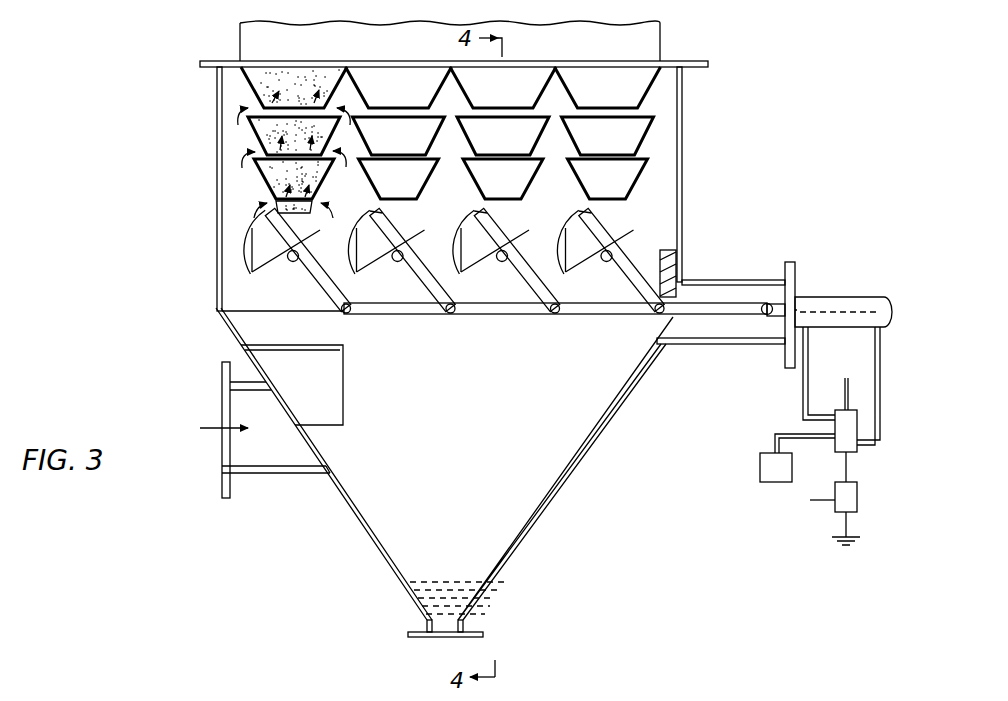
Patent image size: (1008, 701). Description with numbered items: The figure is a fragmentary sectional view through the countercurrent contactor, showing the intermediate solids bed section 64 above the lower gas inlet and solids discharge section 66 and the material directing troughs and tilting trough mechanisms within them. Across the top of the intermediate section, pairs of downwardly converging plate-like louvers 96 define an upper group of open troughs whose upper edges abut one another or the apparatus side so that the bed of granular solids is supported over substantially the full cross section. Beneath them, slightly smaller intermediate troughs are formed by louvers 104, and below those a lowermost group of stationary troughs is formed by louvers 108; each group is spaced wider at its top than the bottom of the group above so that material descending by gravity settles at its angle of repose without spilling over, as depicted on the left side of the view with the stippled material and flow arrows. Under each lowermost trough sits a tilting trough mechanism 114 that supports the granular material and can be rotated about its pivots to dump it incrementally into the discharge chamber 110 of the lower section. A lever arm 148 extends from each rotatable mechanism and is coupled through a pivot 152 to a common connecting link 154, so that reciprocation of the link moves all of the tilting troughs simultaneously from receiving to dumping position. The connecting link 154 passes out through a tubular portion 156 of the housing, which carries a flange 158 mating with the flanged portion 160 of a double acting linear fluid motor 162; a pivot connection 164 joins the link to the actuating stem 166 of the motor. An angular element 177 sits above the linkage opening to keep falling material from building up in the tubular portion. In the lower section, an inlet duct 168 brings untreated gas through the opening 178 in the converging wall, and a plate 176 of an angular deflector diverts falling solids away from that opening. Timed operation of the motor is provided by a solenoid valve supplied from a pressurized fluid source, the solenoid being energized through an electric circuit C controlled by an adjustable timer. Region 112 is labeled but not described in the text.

The intermediate solids bed section 64 is at (684, 131).
The lower gas inlet and solids discharge section 66 is at (535, 523).
The louvers 96 is at (252, 90).
The louvers 104 is at (264, 143).
The louvers 108 is at (262, 184).
The discharge chamber 110 is at (462, 528).
The interior of housing 112 is at (656, 186).
The tilting trough mechanisms 114 is at (230, 252).
The lever arm 148 is at (444, 296).
The pivot 152 is at (456, 316).
The connecting link 154 is at (705, 303).
The tubular portion 156 is at (760, 279).
The flange 158 is at (800, 268).
The flanged portion 160 is at (802, 288).
The linear fluid motor 162 is at (882, 296).
The pivot connection 164 is at (760, 318).
The actuating stem 166 is at (788, 322).
The inlet duct 168 is at (268, 477).
The plate 176 is at (334, 379).
The angular element 177 is at (684, 256).
The opening 178 is at (318, 464).
The electric circuit C is at (846, 467).